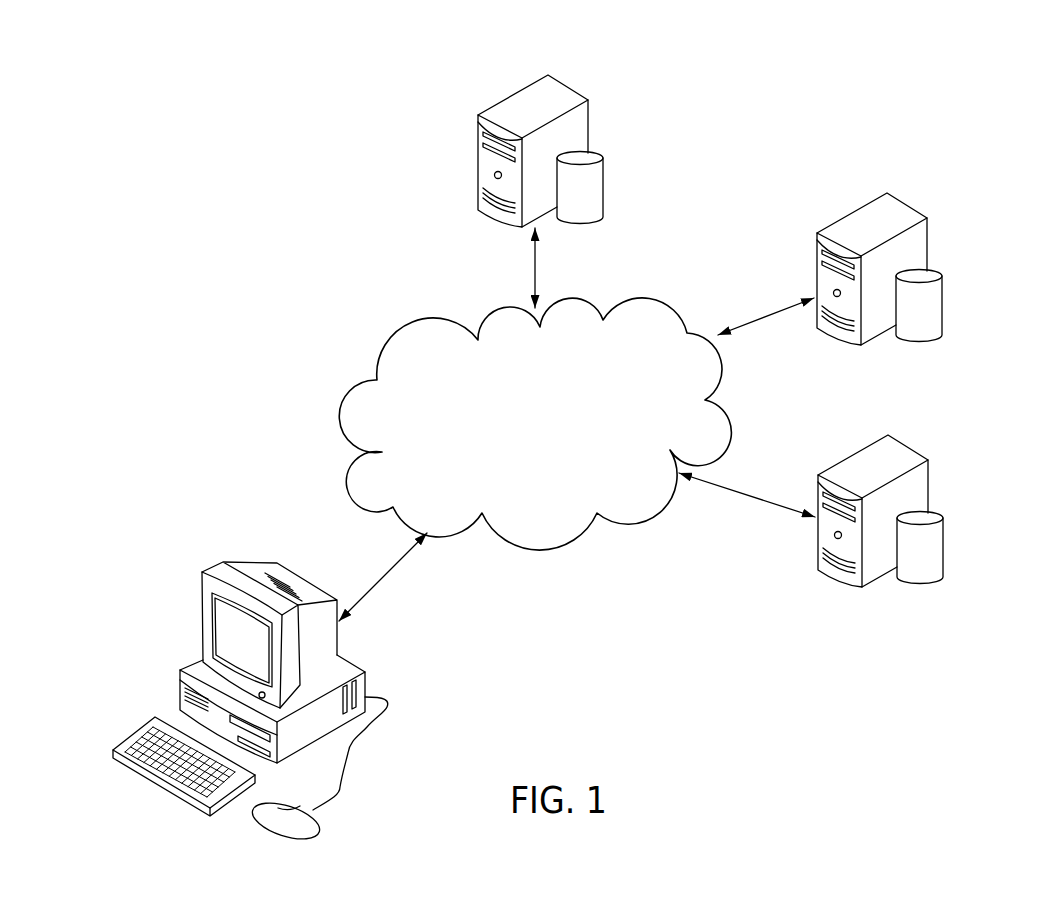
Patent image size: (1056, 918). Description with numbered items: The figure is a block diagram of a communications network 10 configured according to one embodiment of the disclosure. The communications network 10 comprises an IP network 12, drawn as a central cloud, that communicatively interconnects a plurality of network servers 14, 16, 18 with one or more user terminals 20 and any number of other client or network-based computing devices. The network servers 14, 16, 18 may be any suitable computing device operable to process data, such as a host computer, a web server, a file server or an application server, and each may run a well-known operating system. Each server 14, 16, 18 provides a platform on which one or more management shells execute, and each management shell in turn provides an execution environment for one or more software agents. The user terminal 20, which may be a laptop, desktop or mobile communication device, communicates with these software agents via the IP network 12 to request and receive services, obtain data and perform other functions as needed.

The communications network 10 is at (195, 232).
The IP network 12 is at (407, 323).
The network server 14 is at (605, 117).
The network server 16 is at (944, 235).
The network server 18 is at (944, 476).
The user terminal 20 is at (178, 588).